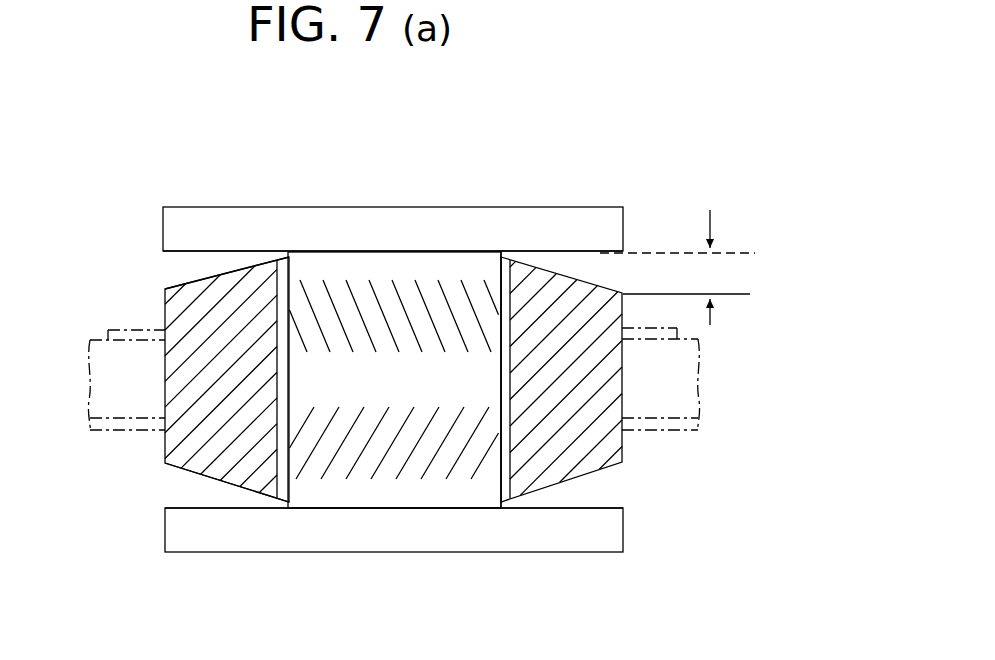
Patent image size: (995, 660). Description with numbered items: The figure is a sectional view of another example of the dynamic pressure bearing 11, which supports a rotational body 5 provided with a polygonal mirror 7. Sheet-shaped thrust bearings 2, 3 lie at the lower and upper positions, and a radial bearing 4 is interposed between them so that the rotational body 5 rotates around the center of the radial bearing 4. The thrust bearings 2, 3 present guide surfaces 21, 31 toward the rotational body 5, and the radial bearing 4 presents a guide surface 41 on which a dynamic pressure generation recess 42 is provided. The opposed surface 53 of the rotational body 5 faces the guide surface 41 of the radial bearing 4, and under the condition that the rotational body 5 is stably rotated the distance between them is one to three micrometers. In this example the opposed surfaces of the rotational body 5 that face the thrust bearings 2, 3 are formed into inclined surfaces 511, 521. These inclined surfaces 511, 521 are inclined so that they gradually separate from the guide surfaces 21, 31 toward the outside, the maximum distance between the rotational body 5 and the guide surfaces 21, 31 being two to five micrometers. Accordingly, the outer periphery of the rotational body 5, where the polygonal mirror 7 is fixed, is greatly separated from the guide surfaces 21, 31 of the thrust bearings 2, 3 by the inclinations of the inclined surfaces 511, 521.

The dynamic pressure bearing 11 is at (218, 184).
The thrust bearing 2 is at (413, 528).
The guide surface 21 is at (165, 508).
The thrust bearing 3 is at (506, 212).
The guide surface 31 is at (165, 253).
The radial bearing 4 is at (370, 360).
The guide surface 41 is at (501, 385).
The dynamic pressure generation recess 42 is at (400, 420).
The rotational body 5 is at (620, 462).
The inclined surface 511 is at (183, 478).
The inclined surface 521 is at (178, 283).
The opposed surface 53 is at (278, 384).
The polygonal mirror 7 is at (100, 351).